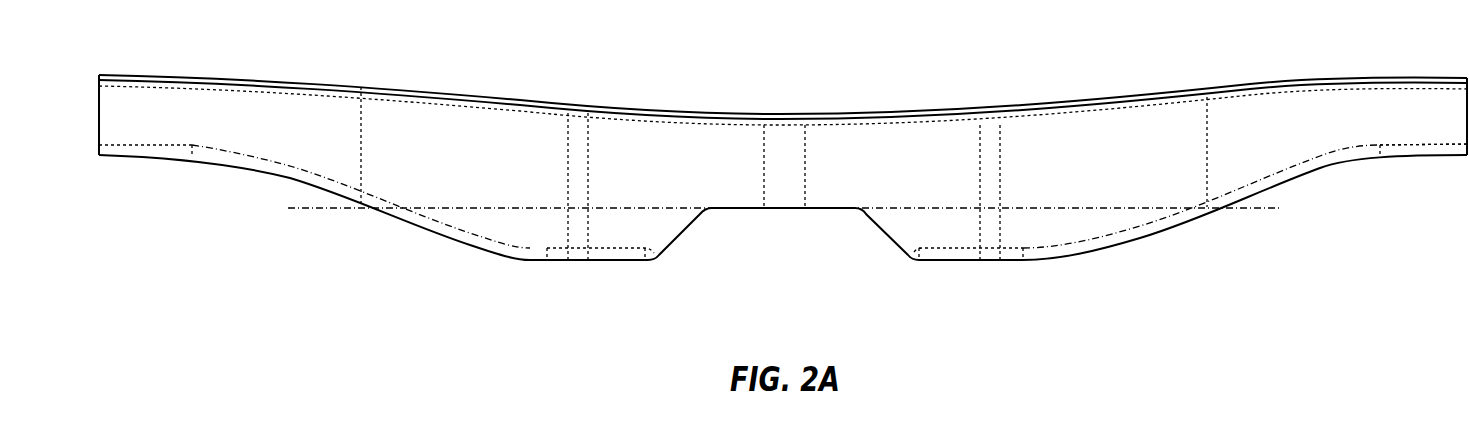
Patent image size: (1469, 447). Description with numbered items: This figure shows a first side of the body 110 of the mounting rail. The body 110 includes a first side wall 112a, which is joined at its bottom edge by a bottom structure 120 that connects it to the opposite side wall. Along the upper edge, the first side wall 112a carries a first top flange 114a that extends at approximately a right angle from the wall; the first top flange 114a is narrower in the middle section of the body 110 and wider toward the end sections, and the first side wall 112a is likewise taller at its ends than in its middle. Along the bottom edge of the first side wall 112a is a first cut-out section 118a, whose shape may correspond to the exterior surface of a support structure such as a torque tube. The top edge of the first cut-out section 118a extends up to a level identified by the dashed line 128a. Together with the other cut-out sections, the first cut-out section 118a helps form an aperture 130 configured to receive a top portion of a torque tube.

The body 110 is at (267, 173).
The first side wall 112a is at (1315, 132).
The first top flange 114a is at (1350, 76).
The first cut-out section 118a is at (778, 208).
The bottom structure 120 is at (437, 235).
The dashed line 128a is at (1233, 208).
The aperture 130 is at (822, 243).